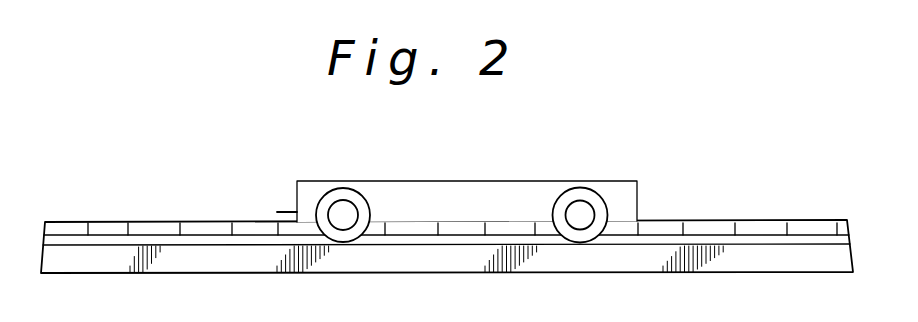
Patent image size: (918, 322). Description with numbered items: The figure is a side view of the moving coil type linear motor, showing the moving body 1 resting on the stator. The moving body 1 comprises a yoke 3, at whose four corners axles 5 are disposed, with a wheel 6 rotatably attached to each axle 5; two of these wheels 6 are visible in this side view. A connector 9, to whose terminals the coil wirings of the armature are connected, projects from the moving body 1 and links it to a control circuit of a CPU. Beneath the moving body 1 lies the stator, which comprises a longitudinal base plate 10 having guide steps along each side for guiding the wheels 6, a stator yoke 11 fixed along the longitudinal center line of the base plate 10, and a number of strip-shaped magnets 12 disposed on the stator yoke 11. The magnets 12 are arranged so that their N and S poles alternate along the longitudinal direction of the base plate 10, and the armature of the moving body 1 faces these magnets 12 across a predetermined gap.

The moving body 1 is at (450, 182).
The yoke 3 is at (530, 183).
The axle 5 is at (348, 214).
The wheel 6 is at (334, 196).
The connector 9 is at (287, 211).
The base plate 10 is at (784, 257).
The stator yoke 11 is at (743, 240).
The magnet 12 is at (152, 227).